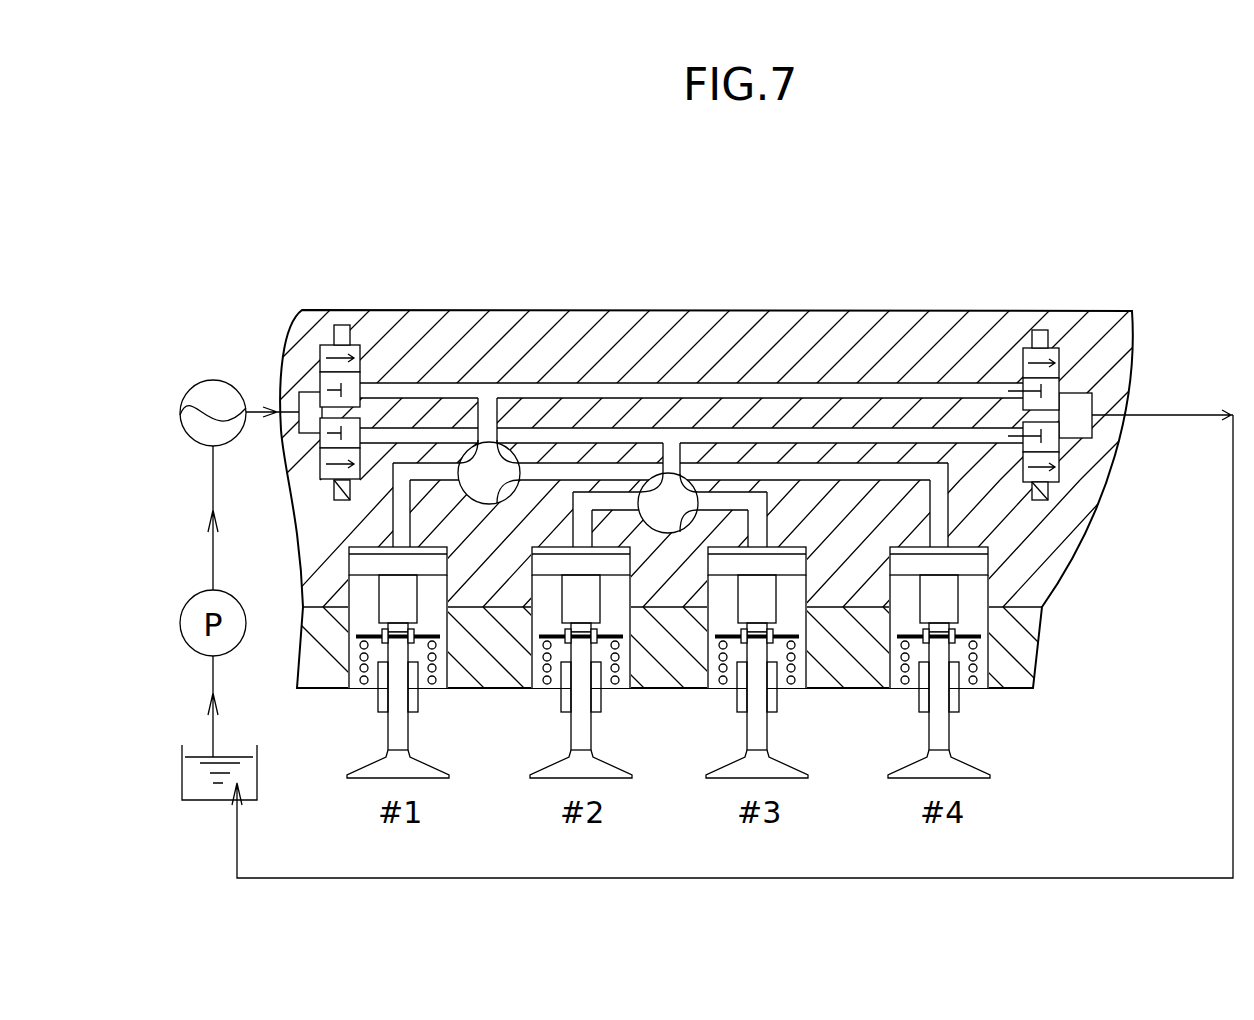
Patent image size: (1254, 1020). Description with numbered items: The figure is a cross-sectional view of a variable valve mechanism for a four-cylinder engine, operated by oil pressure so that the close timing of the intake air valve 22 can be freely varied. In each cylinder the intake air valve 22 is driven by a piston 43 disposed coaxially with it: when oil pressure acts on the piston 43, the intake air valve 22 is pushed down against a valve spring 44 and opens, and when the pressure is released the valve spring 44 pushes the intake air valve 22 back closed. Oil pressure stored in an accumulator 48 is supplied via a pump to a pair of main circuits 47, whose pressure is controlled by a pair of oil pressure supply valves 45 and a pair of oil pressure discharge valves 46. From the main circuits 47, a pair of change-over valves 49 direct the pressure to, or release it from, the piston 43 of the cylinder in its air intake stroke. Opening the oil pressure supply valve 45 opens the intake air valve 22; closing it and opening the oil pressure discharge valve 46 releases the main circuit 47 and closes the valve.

The intake air valve 22 is at (977, 767).
The piston 43 is at (983, 567).
The valve spring 44 is at (985, 673).
The oil pressure supply valve 45 is at (362, 342).
The oil pressure discharge valve 46 is at (1023, 344).
The main circuit 47 is at (812, 436).
The accumulator 48 is at (206, 381).
The change-over valve 49 is at (510, 447).